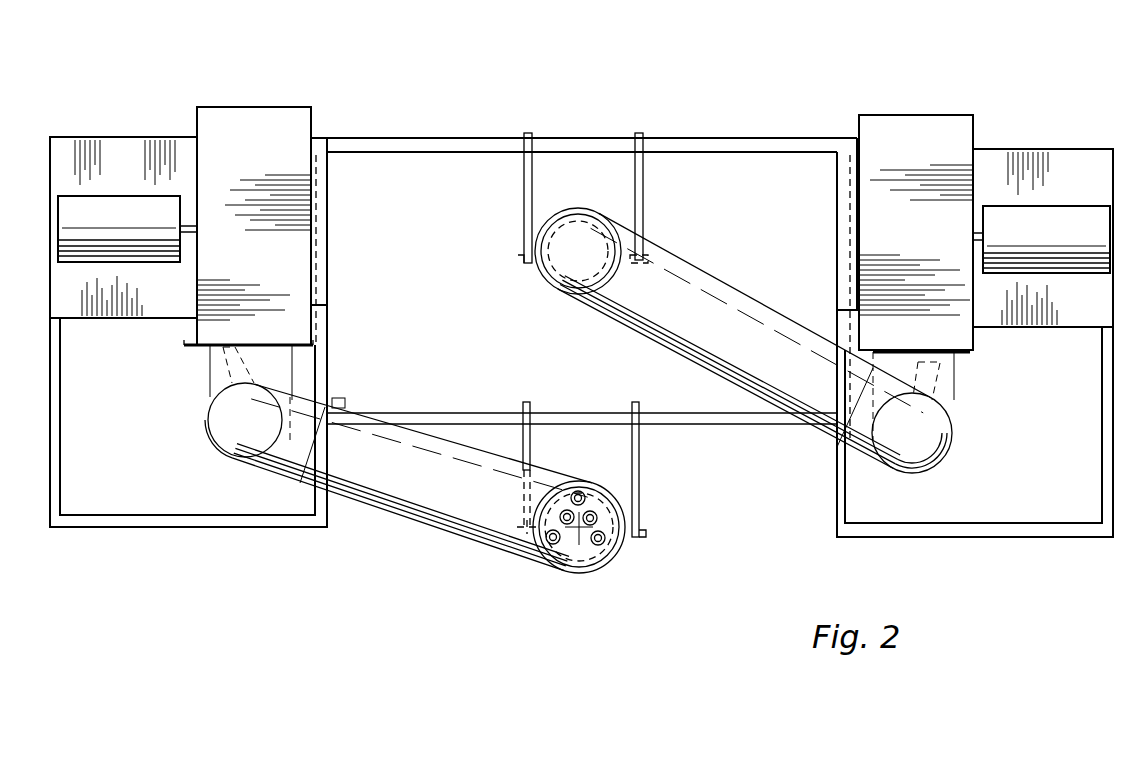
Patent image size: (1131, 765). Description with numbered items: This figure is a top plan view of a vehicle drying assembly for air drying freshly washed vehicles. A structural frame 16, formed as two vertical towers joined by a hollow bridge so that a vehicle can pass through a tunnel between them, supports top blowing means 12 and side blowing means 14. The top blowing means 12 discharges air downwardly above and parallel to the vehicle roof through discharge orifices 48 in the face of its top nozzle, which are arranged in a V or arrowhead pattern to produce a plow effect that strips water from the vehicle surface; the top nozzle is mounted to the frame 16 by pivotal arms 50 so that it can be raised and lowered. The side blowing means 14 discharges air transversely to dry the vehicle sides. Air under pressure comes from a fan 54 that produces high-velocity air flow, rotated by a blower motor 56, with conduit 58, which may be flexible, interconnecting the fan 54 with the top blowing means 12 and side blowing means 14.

The top blowing means 12 is at (537, 279).
The side blowing means 14 is at (203, 436).
The frame 16 is at (737, 426).
The discharge orifices 48 is at (573, 575).
The pivotal arms 50 is at (524, 190).
The fan 54 is at (289, 112).
The blower motor 56 is at (116, 213).
The conduit 58 is at (738, 302).